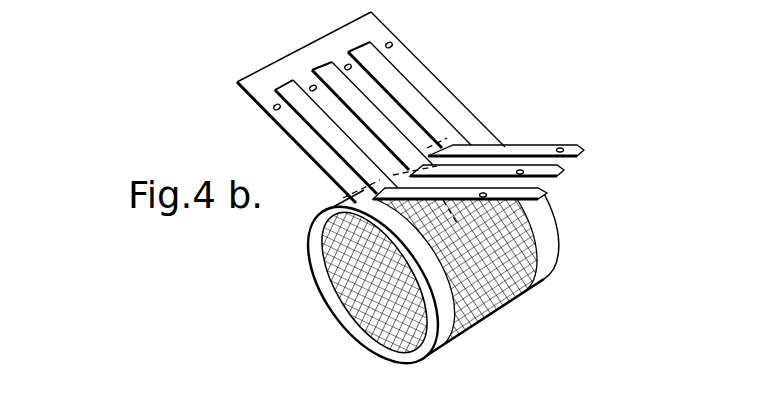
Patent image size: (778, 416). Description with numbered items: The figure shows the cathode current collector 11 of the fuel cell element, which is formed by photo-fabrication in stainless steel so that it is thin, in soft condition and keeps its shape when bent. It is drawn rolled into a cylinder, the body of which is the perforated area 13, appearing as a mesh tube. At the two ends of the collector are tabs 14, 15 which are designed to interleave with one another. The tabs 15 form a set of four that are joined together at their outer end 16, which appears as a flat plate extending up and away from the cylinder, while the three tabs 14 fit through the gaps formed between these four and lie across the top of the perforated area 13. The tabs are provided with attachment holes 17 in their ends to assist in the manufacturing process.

The cathode current collector 11 is at (291, 322).
The perforated area 13 is at (548, 275).
The tabs 14 is at (550, 192).
The tabs 15 is at (447, 99).
The outer end 16 is at (310, 46).
The attachment holes 17 is at (355, 67).